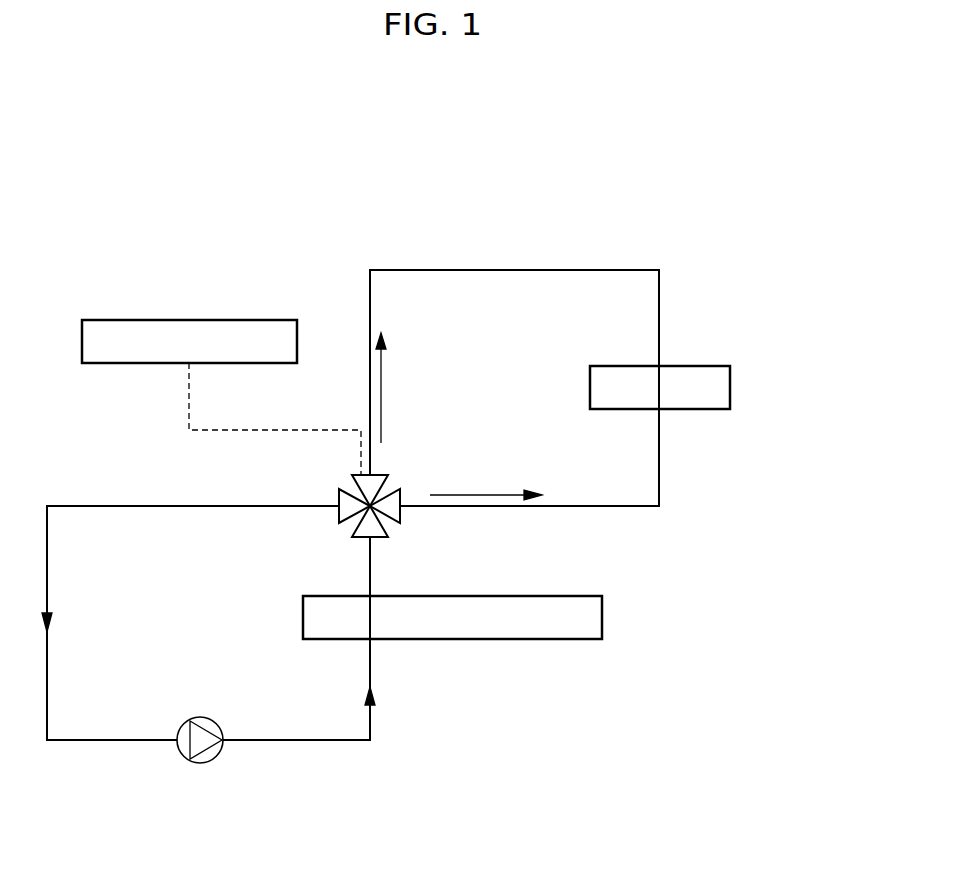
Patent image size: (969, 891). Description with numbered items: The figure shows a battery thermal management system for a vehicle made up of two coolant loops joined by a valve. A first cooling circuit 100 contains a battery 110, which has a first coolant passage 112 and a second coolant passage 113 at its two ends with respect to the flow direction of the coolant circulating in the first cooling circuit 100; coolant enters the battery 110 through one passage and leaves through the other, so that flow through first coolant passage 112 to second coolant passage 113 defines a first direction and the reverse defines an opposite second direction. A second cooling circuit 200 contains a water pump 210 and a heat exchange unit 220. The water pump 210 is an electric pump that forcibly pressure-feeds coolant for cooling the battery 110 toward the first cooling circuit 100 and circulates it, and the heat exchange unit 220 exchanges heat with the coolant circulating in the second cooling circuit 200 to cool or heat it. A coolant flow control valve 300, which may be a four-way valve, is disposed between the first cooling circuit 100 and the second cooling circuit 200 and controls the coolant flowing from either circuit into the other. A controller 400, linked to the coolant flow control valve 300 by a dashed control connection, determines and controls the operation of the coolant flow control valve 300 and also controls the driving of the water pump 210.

The first cooling circuit 100 is at (507, 254).
The battery 110 is at (730, 386).
The first coolant passage 112 is at (660, 409).
The second coolant passage 113 is at (660, 366).
The second cooling circuit 200 is at (78, 491).
The water pump 210 is at (205, 717).
The heat exchange unit 220 is at (602, 617).
The coolant flow control valve 300 is at (400, 516).
The controller 400 is at (184, 320).